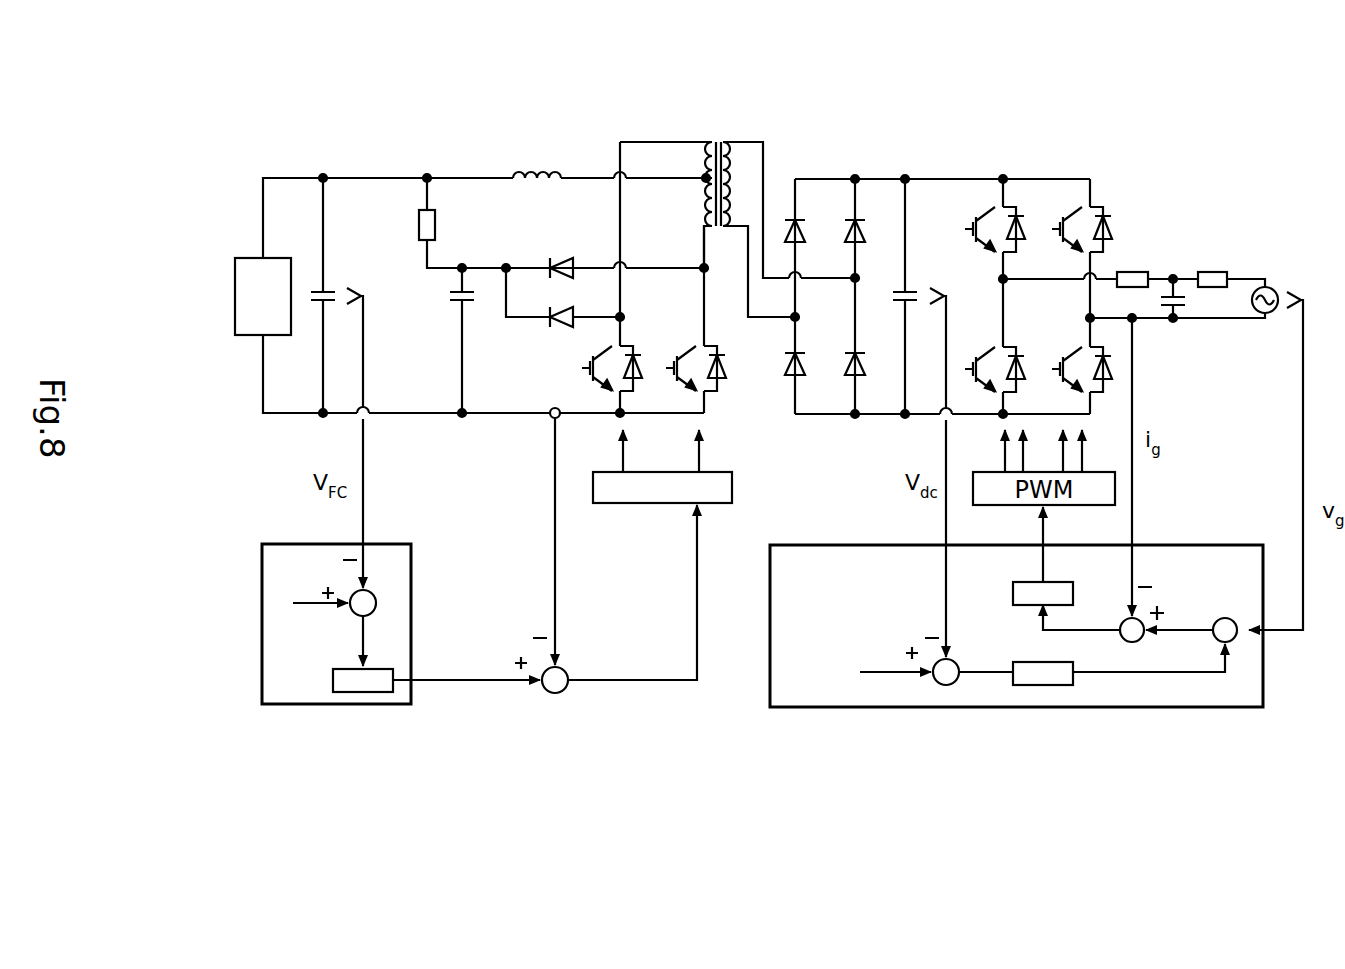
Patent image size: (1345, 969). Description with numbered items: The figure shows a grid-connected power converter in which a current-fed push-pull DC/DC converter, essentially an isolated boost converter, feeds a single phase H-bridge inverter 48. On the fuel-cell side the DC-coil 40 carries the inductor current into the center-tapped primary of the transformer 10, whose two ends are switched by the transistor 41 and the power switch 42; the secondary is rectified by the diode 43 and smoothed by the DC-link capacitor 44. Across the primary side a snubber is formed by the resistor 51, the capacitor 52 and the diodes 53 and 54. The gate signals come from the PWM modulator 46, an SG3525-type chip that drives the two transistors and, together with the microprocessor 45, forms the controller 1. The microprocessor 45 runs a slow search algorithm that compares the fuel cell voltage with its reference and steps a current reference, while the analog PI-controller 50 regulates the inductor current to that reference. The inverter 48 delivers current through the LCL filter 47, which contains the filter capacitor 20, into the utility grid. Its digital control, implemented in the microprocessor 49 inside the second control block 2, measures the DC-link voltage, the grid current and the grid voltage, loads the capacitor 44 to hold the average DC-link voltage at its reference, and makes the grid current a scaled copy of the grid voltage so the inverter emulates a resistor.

The controller 1 is at (309, 672).
The inverter control unit 2 is at (1038, 658).
The transformer 10 is at (727, 130).
The filter capacitor 20 is at (1178, 322).
The DC-coil 40 is at (540, 172).
The transistor 41 is at (637, 381).
The power switch 42 is at (721, 381).
The diode 43 is at (797, 218).
The capacitor 44 is at (907, 288).
The microprocessor 45 is at (260, 635).
The PWM modulator 46 is at (732, 492).
The LCL filter 47 is at (1184, 264).
The single phase H-bridge inverter 48 is at (1090, 165).
The microprocessor 49 is at (1263, 660).
The analog PI-controller 50 is at (697, 640).
The resistor 51 is at (427, 207).
The capacitor 52 is at (465, 307).
The diode 53 is at (574, 306).
The diode 54 is at (551, 258).